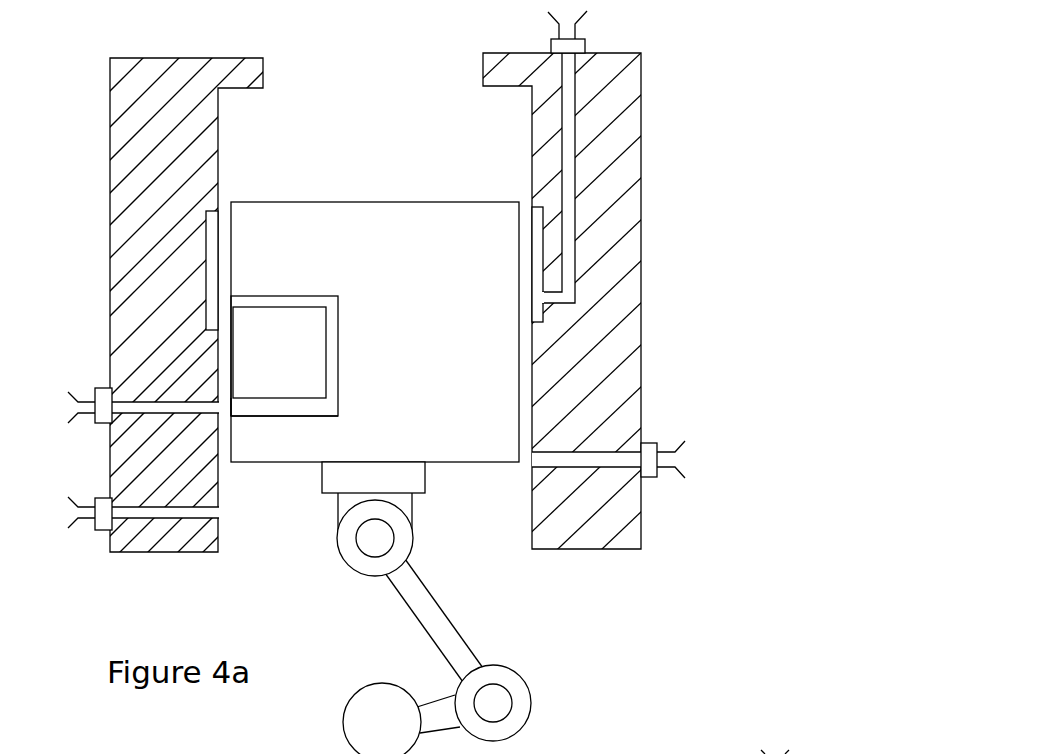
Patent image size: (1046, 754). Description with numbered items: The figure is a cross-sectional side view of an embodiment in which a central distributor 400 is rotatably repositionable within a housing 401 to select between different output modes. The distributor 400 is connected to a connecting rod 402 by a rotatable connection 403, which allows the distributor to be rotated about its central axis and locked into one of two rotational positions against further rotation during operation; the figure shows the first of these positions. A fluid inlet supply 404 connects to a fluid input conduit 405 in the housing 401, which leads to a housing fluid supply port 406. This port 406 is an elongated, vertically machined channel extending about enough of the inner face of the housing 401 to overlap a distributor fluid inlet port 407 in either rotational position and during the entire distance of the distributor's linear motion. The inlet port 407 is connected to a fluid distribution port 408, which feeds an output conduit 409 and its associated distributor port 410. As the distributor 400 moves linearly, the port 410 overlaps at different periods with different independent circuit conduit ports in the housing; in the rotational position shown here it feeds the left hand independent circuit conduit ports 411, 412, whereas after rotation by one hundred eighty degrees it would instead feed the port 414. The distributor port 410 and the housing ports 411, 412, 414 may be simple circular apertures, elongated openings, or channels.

The central distributor 400 is at (383, 217).
The housing 401 is at (203, 117).
The connecting rod 402 is at (453, 640).
The rotatable connection 403 is at (410, 482).
The fluid inlet supply 404 is at (580, 43).
The fluid input conduit 405 is at (568, 187).
The housing fluid supply port 406 is at (213, 268).
The distributor fluid inlet port 407 is at (257, 303).
The fluid distribution port 408 is at (333, 358).
The output conduit 409 is at (285, 408).
The distributor port 410 is at (233, 408).
The independent circuit conduit port 411 is at (212, 407).
The independent circuit conduit port 412 is at (213, 513).
The independent circuit conduit port 414 is at (538, 460).